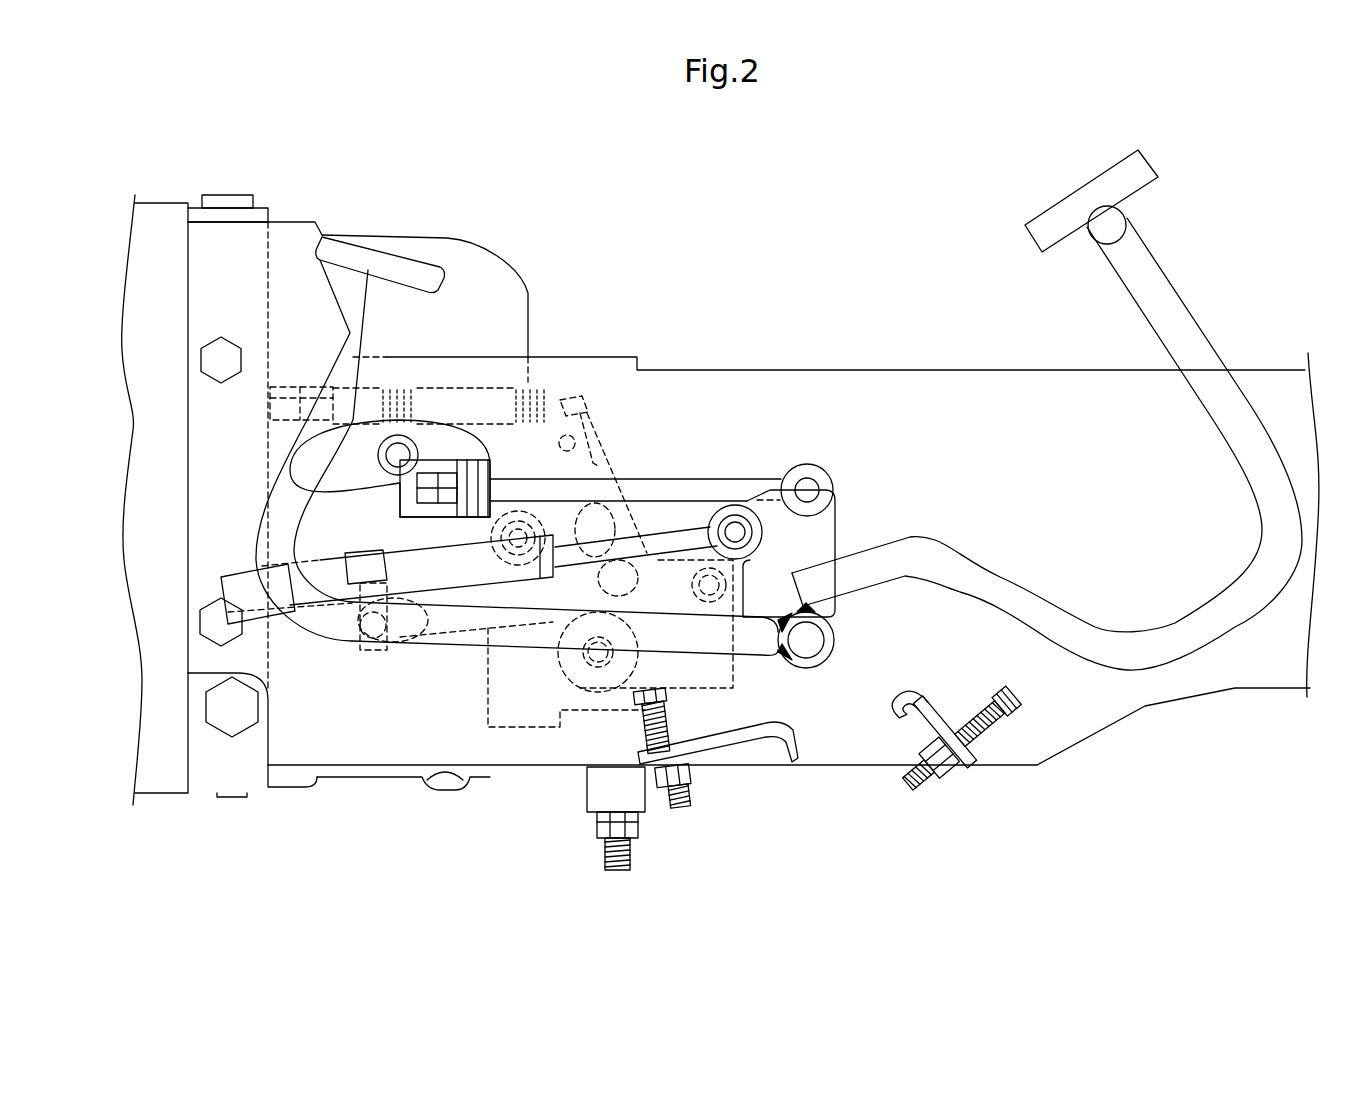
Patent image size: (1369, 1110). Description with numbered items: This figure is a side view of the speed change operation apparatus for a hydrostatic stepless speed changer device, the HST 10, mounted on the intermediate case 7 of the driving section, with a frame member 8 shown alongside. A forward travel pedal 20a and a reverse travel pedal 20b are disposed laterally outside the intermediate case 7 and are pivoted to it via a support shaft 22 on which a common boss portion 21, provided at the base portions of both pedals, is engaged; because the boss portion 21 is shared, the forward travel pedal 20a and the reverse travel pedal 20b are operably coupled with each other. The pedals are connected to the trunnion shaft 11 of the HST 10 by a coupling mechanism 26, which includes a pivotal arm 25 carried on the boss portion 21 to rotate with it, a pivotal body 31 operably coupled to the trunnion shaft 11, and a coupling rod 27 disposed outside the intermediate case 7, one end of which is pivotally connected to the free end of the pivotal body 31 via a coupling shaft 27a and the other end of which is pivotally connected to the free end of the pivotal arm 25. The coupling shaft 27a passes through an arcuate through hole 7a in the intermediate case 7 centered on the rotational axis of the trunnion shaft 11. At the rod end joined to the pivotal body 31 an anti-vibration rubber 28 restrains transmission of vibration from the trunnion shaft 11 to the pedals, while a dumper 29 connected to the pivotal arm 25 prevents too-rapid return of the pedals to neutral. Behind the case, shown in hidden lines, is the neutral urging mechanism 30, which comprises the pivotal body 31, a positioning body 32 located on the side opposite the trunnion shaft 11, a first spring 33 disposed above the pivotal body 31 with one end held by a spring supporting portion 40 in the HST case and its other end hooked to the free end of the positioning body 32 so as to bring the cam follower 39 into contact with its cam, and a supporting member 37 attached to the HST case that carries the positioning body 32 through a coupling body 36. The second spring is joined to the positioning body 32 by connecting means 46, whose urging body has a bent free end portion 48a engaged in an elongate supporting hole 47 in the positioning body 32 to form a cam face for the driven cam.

The intermediate case 7 is at (915, 368).
The arcuate through hole 7a is at (460, 440).
The dash panel member 8 is at (153, 803).
The HST 10 is at (368, 778).
The trunnion shaft 11 is at (388, 630).
The forward travel pedal 20a is at (1052, 205).
The reverse travel pedal 20b is at (357, 236).
The boss portion 21 is at (838, 637).
The support shaft 22 is at (818, 650).
The pivotal arm 25 is at (838, 535).
The coupling mechanism 26 is at (844, 477).
The coupling rod 27 is at (738, 480).
The coupling shaft 27a is at (390, 462).
The anti-vibration rubber 28 is at (460, 517).
The dumper 29 is at (245, 577).
The neutral urging mechanism 30 is at (598, 403).
The pivotal body 31 is at (455, 640).
The positioning body 32 is at (600, 467).
The first spring 33 is at (538, 383).
The coupling body 36 is at (560, 660).
The supporting member 37 is at (733, 688).
The cam follower 39 is at (540, 585).
The spring supporting portion 40 is at (320, 385).
The connecting means 46 is at (640, 512).
The supporting hole 47 is at (598, 531).
The free end portion 48a is at (521, 631).